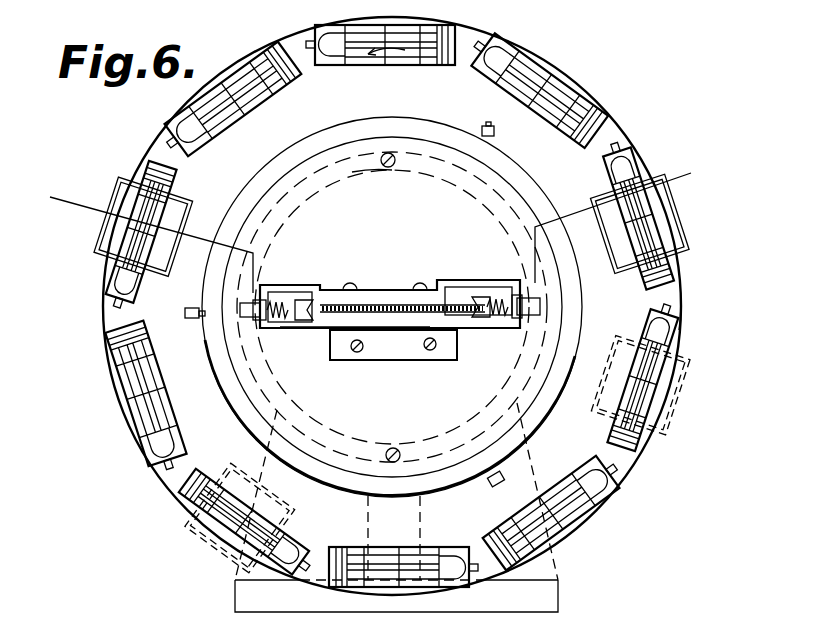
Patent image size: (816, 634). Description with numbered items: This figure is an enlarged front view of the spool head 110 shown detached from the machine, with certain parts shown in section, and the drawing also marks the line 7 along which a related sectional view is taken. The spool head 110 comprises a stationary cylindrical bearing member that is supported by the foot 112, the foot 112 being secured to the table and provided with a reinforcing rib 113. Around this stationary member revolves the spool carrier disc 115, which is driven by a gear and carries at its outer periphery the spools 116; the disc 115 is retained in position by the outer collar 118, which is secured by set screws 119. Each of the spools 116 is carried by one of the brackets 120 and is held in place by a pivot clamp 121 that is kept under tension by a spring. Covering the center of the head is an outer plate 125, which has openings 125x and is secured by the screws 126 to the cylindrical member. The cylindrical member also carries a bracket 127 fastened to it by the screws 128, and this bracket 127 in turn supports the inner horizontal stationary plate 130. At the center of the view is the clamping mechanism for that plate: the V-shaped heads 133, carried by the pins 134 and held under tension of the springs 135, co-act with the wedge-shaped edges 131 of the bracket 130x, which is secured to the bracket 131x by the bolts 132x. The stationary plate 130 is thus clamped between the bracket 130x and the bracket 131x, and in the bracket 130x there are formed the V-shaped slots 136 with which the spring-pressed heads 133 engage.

The section line 7- 7 is at (50, 225).
The spool head 110 is at (683, 285).
The foot 112 is at (538, 597).
The reinforcing rib 113 is at (367, 519).
The spool carrier disc 115 is at (684, 307).
The spools 116 is at (97, 230).
The outer collar 118 is at (566, 421).
The set screws 119 is at (199, 313).
The brackets 120 is at (247, 62).
The pivot clamp 121 is at (193, 123).
The outer plate 125 is at (325, 208).
The openings 125x is at (488, 214).
The screws 126 is at (396, 448).
The bracket 127 is at (425, 350).
The screws 128 is at (356, 353).
The inner horizontal stationary plate 130 is at (368, 303).
The bracket 130x is at (350, 285).
The wedge-shaped edges 131 is at (473, 295).
The bracket 131x is at (343, 320).
The bolts 132x is at (372, 284).
The V-shaped heads 133 is at (491, 298).
The pins 134 is at (240, 317).
The springs 135 is at (518, 281).
The V-shaped slots 136 is at (345, 300).